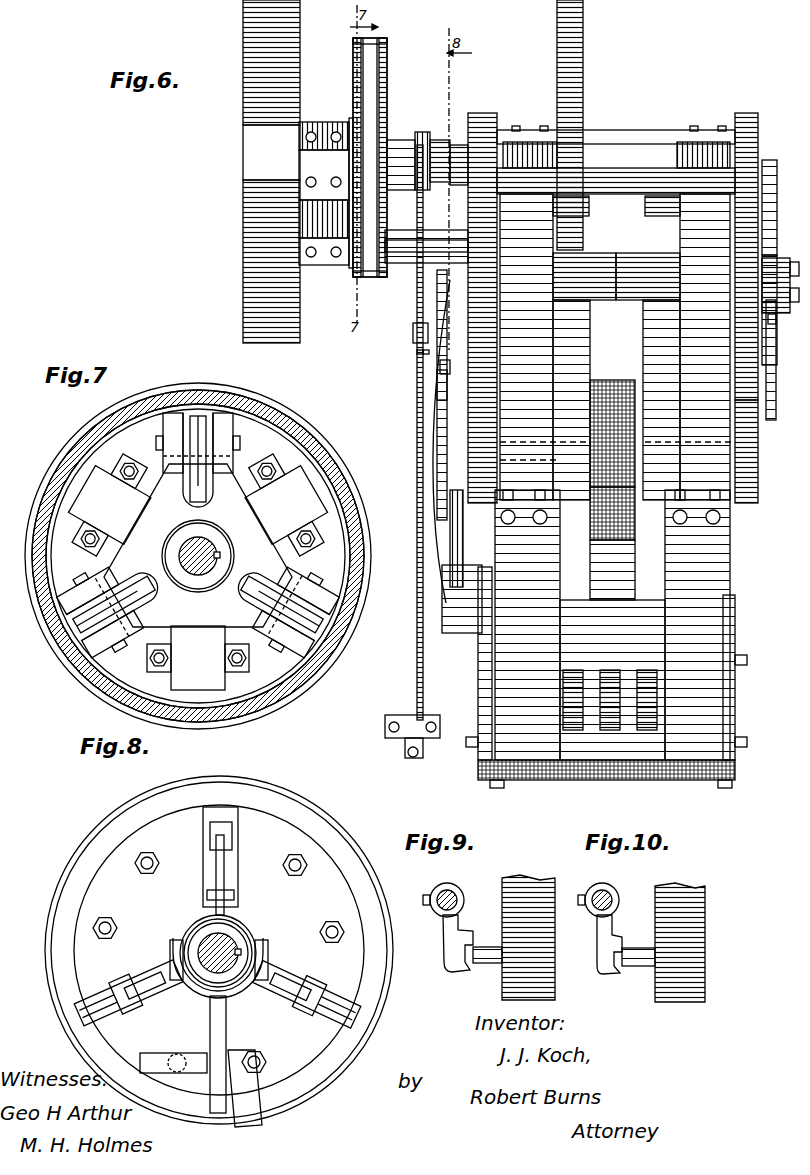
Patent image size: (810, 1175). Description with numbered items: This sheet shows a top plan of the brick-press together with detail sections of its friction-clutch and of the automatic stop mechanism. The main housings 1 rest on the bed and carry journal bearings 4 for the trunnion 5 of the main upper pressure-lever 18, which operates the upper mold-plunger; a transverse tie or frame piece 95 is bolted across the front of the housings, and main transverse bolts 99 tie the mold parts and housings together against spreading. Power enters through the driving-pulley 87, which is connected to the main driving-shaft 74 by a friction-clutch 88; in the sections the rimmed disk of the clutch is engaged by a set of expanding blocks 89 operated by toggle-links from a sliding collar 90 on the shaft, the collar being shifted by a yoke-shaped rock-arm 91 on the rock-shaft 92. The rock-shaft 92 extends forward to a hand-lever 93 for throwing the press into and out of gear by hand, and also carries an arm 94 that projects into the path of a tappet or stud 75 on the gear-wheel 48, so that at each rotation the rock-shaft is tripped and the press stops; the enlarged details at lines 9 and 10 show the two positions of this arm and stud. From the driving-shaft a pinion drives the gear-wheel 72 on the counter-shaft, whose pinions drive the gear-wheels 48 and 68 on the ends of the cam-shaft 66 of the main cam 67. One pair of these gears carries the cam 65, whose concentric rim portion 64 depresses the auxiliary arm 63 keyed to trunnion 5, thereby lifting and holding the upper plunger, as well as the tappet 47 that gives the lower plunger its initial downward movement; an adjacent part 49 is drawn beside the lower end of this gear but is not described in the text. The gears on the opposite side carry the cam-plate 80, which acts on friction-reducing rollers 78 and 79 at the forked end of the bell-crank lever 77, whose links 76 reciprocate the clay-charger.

In FIG. 6, the main housing 1 is at (612, 609).
In FIG. 6, the journal bearing 4 is at (734, 669).
In FIG. 6, the trunnion 5 is at (447, 590).
In FIG. 6, the section line 9 is at (417, 354).
In FIG. 6, the section line 10 is at (435, 355).
In FIG. 6, the main upper pressure-lever 18 is at (612, 680).
In FIG. 6, the tappet 47 is at (455, 420).
In FIG. 6, the gear-wheel 48 is at (751, 463).
In FIG. 9, the gear-wheel 48 is at (528, 925).
In FIG. 10, the gear-wheel 48 is at (680, 928).
In FIG. 6, the bracket 49 is at (468, 538).
In FIG. 6, the auxiliary arm 63 is at (443, 382).
In FIG. 6, the concentric rim portion 64 is at (419, 268).
In FIG. 6, the cam 65 is at (462, 283).
In FIG. 6, the cam-shaft 66 is at (648, 276).
In FIG. 6, the main cam 67 is at (590, 277).
In FIG. 6, the gear-wheel 68 is at (613, 294).
In FIG. 6, the gear-wheel 72 is at (585, 125).
In FIG. 6, the main driving-shaft 74 is at (458, 143).
In FIG. 7, the main driving-shaft 74 is at (199, 556).
In FIG. 8, the main driving-shaft 74 is at (219, 953).
In FIG. 6, the tappet or stud 75 is at (447, 365).
In FIG. 9, the tappet or stud 75 is at (487, 964).
In FIG. 10, the tappet or stud 75 is at (631, 966).
In FIG. 6, the link 76 is at (571, 400).
In FIG. 6, the bell-crank lever 77 is at (718, 400).
In FIG. 6, the friction-reducing roller 78 is at (782, 273).
In FIG. 6, the friction-reducing roller 79 is at (770, 329).
In FIG. 6, the cam-plate 80 is at (782, 262).
In FIG. 6, the driving-pulley 87 is at (271, 171).
In FIG. 6, the friction-clutch 88 is at (384, 157).
In FIG. 7, the friction-clutch 88 is at (198, 556).
In FIG. 8, the friction-clutch 88 is at (219, 950).
In FIG. 7, the expanding block 89 is at (197, 567).
In FIG. 7, the sliding collar 90 is at (198, 563).
In FIG. 8, the sliding collar 90 is at (242, 944).
In FIG. 6, the yoke-shaped rock-arm 91 is at (425, 138).
In FIG. 8, the yoke-shaped rock-arm 91 is at (220, 1032).
In FIG. 6, the rock-shaft 92 is at (404, 432).
In FIG. 8, the rock-shaft 92 is at (173, 1050).
In FIG. 9, the rock-shaft 92 is at (450, 897).
In FIG. 10, the rock-shaft 92 is at (605, 897).
In FIG. 6, the hand-lever 93 is at (412, 752).
In FIG. 6, the arm 94 is at (413, 330).
In FIG. 9, the arm 94 is at (444, 943).
In FIG. 10, the arm 94 is at (596, 944).
In FIG. 6, the transverse tie or frame piece 95 is at (606, 780).
In FIG. 6, the main transverse bolt 99 is at (610, 706).